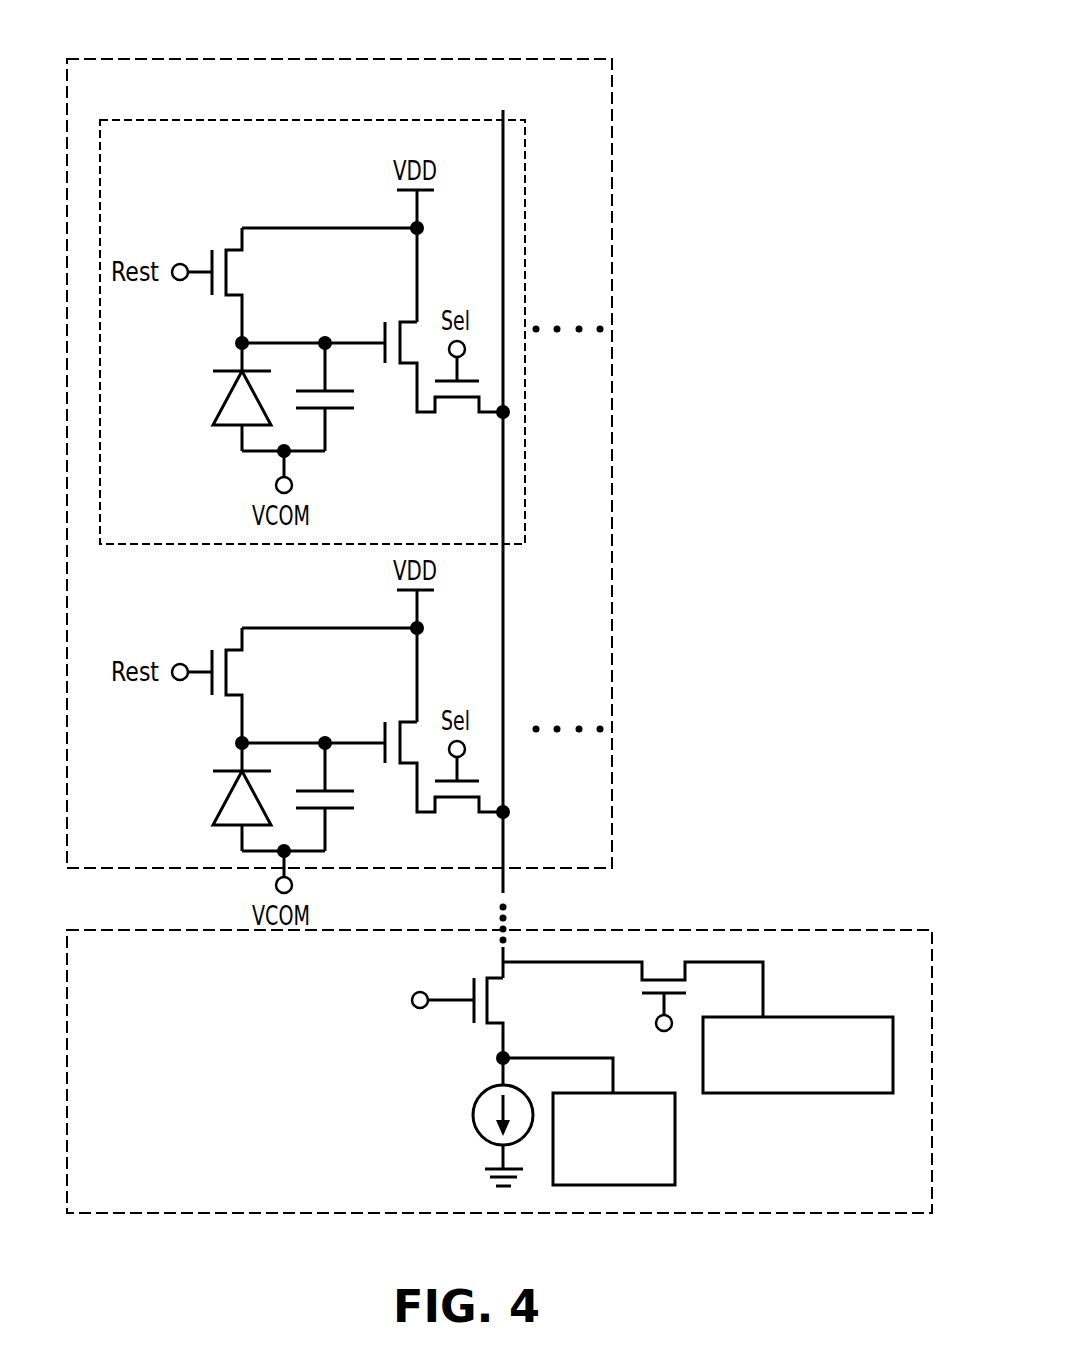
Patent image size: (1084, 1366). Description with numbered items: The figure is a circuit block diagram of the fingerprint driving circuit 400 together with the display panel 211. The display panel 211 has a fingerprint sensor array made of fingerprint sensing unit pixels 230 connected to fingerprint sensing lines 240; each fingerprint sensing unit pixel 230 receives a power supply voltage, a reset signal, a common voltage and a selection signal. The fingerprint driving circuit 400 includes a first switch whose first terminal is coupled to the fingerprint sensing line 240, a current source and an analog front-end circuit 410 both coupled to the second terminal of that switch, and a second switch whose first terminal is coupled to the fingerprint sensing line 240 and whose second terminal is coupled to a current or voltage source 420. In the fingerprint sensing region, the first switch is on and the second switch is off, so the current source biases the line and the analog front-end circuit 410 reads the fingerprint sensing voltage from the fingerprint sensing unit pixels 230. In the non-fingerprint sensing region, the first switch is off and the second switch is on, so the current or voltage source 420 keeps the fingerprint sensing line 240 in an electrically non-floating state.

The display panel 211 is at (380, 495).
The fingerprint sensing unit pixel 230 is at (534, 223).
The fingerprint sensing line 240 is at (493, 162).
The fingerprint driving circuit 400 is at (499, 1040).
The analog front-end (AFE) circuit 410 is at (675, 1138).
The current or voltage source 420 is at (825, 1093).